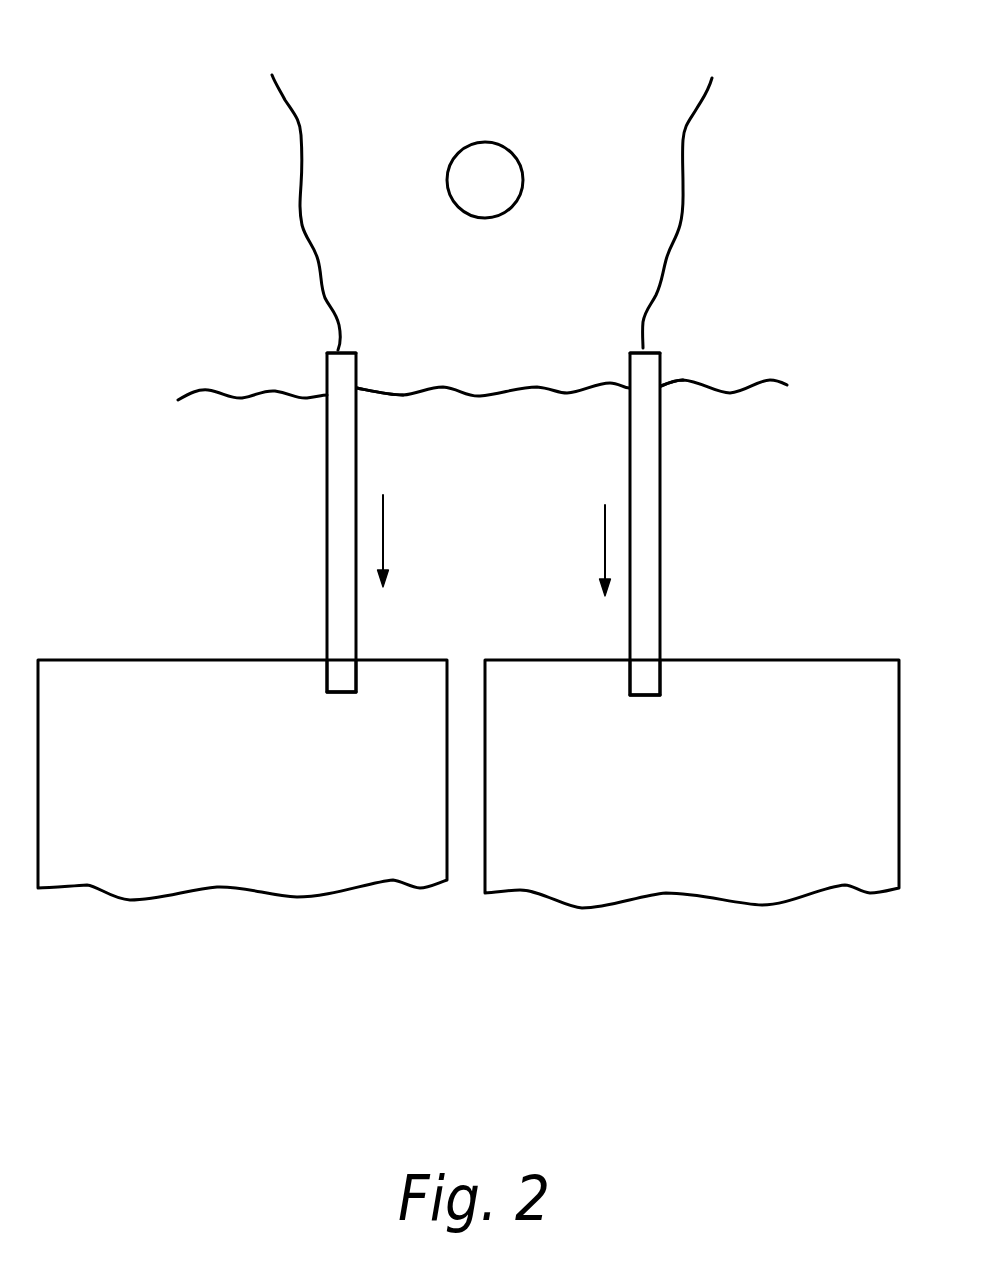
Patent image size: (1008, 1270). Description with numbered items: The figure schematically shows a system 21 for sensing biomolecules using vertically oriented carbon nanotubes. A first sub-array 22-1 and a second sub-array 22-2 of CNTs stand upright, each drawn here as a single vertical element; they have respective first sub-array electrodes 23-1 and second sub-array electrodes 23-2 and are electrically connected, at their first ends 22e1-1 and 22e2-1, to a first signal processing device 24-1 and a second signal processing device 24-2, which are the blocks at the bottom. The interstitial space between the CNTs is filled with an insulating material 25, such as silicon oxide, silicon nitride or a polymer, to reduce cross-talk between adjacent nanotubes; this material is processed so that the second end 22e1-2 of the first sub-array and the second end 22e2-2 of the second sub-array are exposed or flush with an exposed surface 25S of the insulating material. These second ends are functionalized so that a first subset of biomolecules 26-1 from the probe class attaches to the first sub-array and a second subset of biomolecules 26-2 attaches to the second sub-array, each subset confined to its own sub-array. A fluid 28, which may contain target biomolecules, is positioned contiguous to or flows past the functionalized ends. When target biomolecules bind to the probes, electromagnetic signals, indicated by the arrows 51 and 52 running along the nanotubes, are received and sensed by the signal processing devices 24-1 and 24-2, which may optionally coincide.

The system 21 is at (720, 230).
The first sub-array 22-1 is at (337, 503).
The second sub-array 22-2 is at (649, 507).
The first end of first sub-array CNTs 22e1-1 is at (302, 625).
The second end of first sub-array CNTs 22e1-2 is at (304, 335).
The first end of second sub-array CNTs 22e2-1 is at (686, 629).
The second end of second sub-array CNTs 22e2-2 is at (683, 334).
The first sub-array electrodes 23-1 is at (340, 680).
The second sub-array electrodes 23-2 is at (647, 684).
The first signal processing device 24-1 is at (302, 885).
The second signal processing device 24-2 is at (751, 894).
The insulating material 25 is at (477, 396).
The exposed surface of insulating material 25S is at (392, 361).
The first subset of biomolecules 26-1 is at (276, 177).
The second subset of biomolecules 26-2 is at (714, 176).
The fluid 28 is at (485, 180).
The first current direction 51 is at (403, 541).
The second current direction 52 is at (579, 550).